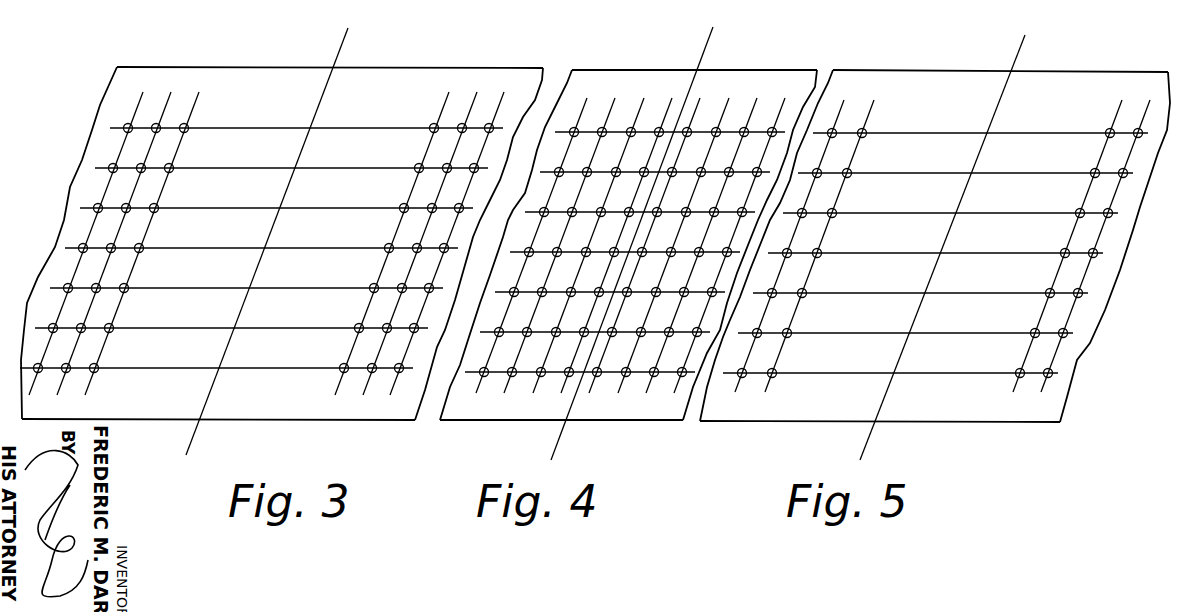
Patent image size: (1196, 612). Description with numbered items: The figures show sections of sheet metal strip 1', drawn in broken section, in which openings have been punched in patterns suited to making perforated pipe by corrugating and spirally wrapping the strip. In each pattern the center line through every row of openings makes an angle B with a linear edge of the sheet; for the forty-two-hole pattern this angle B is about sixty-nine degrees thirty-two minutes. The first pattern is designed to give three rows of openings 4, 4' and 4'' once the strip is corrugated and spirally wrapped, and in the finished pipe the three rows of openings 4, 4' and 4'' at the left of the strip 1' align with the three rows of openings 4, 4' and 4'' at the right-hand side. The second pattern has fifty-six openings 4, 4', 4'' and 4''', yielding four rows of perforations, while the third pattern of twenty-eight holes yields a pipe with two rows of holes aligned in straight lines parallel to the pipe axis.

In FIG. 3, the strip 1' is at (267, 241).
In FIG. 4, the strip 1' is at (632, 243).
In FIG. 5, the strip 1' is at (942, 246).
In FIG. 3, the openings 4 is at (239, 243).
In FIG. 4, the openings 4 is at (531, 243).
In FIG. 5, the openings 4 is at (928, 244).
In FIG. 3, the openings 4' is at (267, 243).
In FIG. 4, the openings 4' is at (559, 243).
In FIG. 5, the openings 4' is at (819, 244).
In FIG. 3, the openings 4'' is at (294, 243).
In FIG. 4, the openings 4'' is at (588, 243).
In FIG. 5, the openings 4'' is at (1095, 245).
In FIG. 4, the openings 4''' is at (616, 243).
In FIG. 3, the angle B is at (107, 347).